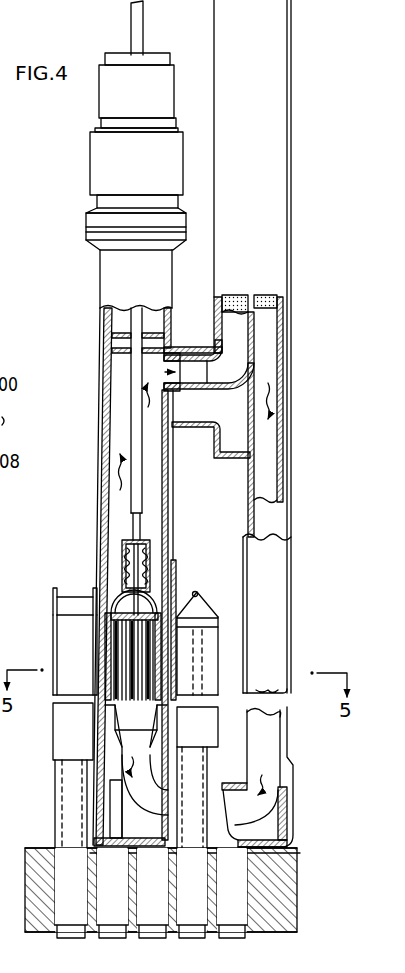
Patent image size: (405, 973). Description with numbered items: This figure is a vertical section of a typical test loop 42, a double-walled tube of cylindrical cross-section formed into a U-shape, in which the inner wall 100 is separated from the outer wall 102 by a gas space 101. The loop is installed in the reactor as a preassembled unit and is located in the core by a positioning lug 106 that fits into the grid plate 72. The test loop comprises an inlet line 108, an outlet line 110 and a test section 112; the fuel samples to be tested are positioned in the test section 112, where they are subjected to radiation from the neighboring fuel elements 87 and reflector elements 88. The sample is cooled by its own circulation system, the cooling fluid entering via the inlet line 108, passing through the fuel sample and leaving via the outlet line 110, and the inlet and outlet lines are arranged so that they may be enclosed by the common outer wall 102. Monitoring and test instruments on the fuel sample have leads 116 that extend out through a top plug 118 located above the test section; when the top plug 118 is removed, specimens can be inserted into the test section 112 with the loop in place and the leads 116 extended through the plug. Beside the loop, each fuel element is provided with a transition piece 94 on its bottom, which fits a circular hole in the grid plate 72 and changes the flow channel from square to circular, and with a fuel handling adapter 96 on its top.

The test loop 42 is at (95, 490).
The grid plate 72 is at (267, 898).
The fuel elements 87 is at (75, 645).
The reflector elements 88 is at (203, 666).
The transition piece 94 is at (72, 780).
The fuel handling adapter 96 is at (68, 593).
The inner wall 100 is at (221, 482).
The gas space 101 is at (223, 413).
The outer wall 102 is at (264, 51).
The positioning lug 106 is at (110, 930).
The inlet line 108 is at (268, 350).
The outlet line 110 is at (233, 328).
The test section 112 is at (133, 668).
The leads 116 is at (143, 22).
The top plug 118 is at (152, 163).